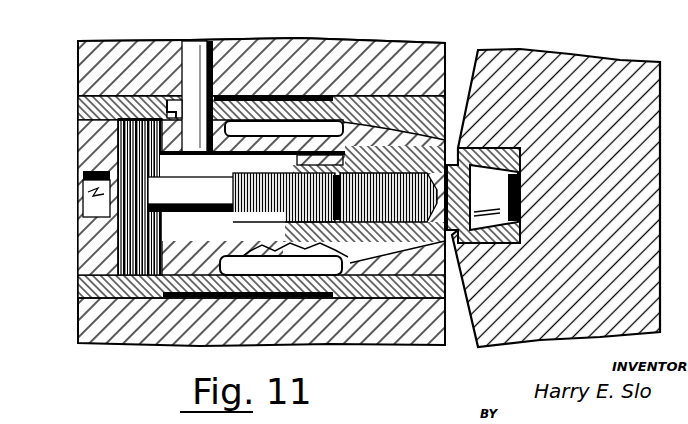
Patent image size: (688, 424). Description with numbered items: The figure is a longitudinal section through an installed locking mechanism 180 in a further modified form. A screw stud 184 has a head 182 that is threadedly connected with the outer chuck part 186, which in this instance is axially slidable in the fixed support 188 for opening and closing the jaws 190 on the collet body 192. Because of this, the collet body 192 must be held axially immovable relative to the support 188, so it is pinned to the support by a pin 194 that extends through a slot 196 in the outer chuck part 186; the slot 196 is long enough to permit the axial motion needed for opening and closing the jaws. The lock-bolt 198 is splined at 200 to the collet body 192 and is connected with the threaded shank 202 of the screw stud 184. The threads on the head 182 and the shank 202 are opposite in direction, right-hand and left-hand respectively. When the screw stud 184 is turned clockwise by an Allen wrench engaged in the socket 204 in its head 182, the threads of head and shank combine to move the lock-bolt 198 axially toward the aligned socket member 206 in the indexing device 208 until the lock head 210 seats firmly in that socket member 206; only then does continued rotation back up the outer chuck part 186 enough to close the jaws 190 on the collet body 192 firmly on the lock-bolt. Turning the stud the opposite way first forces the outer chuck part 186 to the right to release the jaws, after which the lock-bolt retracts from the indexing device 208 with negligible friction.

The locking mechanism 180 is at (66, 270).
The head 182 is at (92, 145).
The screw stud 184 is at (177, 190).
The outer chuck part 186 is at (92, 110).
The fixed support 188 is at (323, 50).
The jaws 190 is at (452, 100).
The collet body 192 is at (220, 258).
The pin 194 is at (192, 85).
The slot 196 is at (160, 106).
The lock-bolt 198 is at (370, 236).
The spline 200 is at (281, 162).
The threaded shank 202 is at (263, 225).
The socket 204 is at (88, 198).
The socket member 206 is at (492, 157).
The indexing device 208 is at (586, 54).
The lock head 210 is at (494, 197).